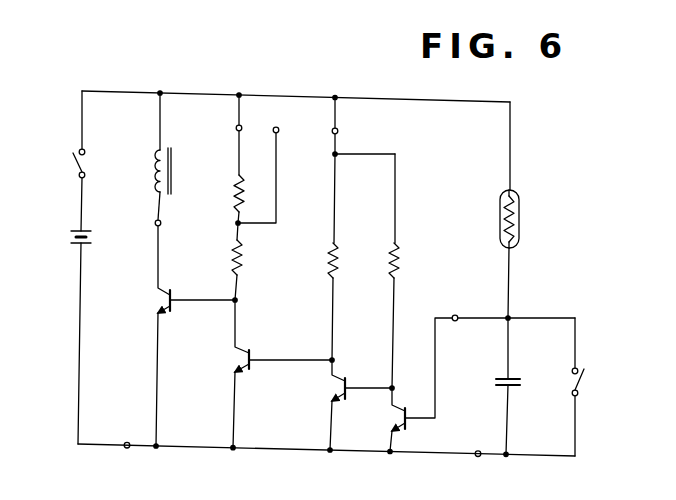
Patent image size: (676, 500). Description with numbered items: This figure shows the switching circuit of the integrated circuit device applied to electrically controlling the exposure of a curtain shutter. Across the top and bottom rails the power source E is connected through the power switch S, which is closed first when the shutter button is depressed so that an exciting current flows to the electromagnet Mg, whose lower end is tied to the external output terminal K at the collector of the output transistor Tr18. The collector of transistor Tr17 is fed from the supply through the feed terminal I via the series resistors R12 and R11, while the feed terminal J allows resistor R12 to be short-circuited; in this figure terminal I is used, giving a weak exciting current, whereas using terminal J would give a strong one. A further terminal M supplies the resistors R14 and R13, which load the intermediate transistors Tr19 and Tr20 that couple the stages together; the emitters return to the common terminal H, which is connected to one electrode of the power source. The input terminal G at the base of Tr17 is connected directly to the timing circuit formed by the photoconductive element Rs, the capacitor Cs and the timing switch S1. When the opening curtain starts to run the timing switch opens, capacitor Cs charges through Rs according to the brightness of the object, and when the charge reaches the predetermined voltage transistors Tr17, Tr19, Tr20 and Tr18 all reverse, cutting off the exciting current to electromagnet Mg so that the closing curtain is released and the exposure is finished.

The power switch S is at (70, 164).
The power source E is at (73, 231).
The electromagnet Mg is at (157, 158).
The external output terminal K is at (155, 223).
The feed terminal I is at (236, 128).
The feed terminal J is at (273, 130).
The resistor R12 is at (234, 195).
The resistor R11 is at (242, 245).
The transistor Tr18 is at (173, 296).
The transistor Tr20 is at (262, 343).
The terminal M is at (338, 133).
The resistor R14 is at (352, 279).
The resistor R13 is at (413, 279).
The transistor Tr19 is at (358, 373).
The transistor Tr17 is at (408, 427).
The input terminal G is at (453, 316).
The photoconductive element Rs is at (520, 214).
The capacitor Cs is at (510, 378).
The timing switch S1 is at (593, 387).
The terminal H is at (127, 448).